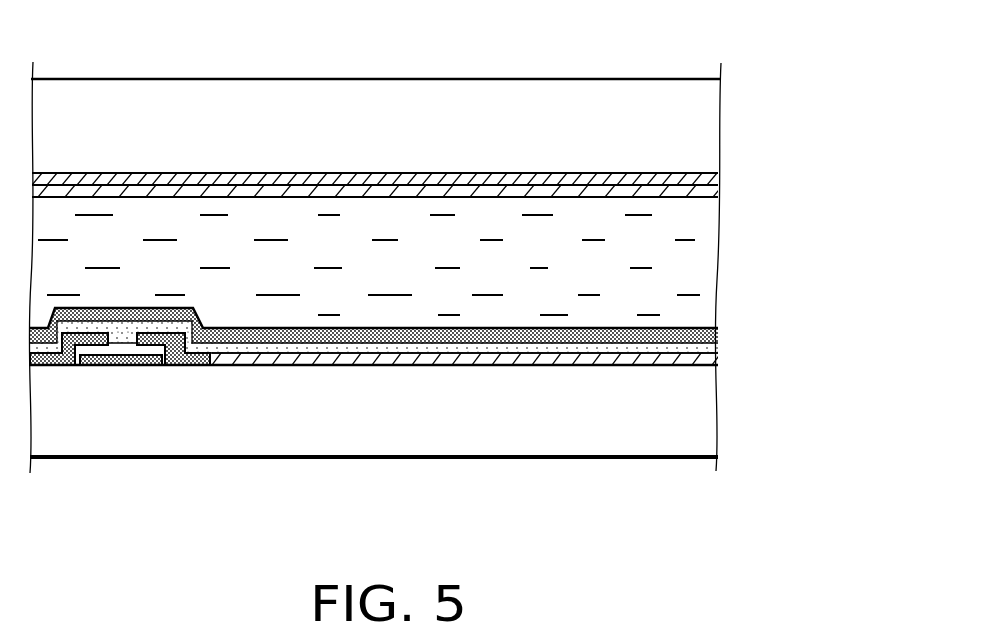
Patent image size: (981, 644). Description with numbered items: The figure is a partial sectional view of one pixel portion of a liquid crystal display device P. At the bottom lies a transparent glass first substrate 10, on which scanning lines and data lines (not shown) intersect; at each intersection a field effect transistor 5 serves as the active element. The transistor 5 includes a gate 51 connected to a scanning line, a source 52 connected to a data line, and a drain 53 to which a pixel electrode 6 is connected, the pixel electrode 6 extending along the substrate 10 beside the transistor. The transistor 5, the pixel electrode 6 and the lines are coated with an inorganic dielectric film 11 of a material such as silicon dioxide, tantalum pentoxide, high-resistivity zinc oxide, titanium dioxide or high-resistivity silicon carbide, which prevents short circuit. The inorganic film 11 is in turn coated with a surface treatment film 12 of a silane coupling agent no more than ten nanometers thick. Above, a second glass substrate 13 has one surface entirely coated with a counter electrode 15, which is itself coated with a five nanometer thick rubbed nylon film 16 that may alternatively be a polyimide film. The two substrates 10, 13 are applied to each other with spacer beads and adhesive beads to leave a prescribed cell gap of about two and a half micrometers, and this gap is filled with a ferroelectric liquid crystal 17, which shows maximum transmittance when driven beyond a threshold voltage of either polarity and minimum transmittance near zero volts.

The liquid crystal display device P is at (661, 56).
The second substrate 13 is at (704, 122).
The counter electrode 15 is at (717, 181).
The nylon film 16 is at (717, 191).
The ferroelectric liquid crystal 17 is at (401, 280).
The surface treatment film 12 is at (706, 338).
The inorganic dielectric film 11 is at (720, 350).
The pixel electrode 6 is at (713, 362).
The first substrate 10 is at (700, 423).
The field effect transistor 5 is at (125, 452).
The gate 51 is at (125, 366).
The source 52 is at (53, 366).
The drain 53 is at (190, 366).